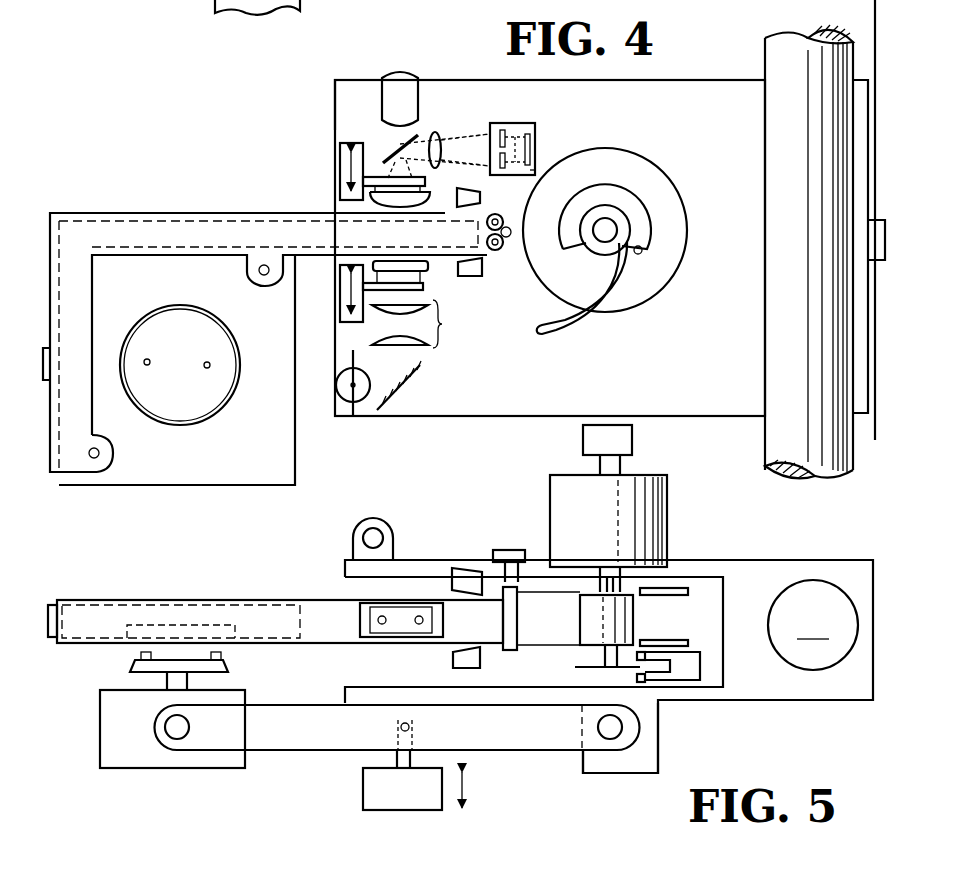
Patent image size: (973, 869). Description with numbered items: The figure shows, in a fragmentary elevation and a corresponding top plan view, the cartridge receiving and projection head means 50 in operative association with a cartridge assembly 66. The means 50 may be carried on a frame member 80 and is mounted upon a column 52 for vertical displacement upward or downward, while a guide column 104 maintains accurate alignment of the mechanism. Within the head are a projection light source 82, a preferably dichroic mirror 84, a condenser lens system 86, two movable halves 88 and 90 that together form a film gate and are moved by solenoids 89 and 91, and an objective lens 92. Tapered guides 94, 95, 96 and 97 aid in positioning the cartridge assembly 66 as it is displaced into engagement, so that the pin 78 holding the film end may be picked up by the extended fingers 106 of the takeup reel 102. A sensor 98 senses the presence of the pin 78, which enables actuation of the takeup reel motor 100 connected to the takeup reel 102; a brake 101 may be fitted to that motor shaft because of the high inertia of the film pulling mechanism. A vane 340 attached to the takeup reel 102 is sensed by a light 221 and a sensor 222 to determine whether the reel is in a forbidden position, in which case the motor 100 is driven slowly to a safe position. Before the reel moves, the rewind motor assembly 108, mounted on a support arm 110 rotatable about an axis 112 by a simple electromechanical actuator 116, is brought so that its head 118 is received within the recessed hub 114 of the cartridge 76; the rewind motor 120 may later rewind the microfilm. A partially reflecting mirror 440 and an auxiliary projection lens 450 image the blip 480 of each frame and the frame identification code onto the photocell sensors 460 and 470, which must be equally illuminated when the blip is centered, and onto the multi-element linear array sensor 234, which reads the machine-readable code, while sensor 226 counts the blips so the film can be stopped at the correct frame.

In FIG. 4, the cartridge receiving and projection head means 50 is at (300, 106).
In FIG. 4, the cartridge assembly 66 is at (142, 190).
In FIG. 4, the frame member 80 is at (357, 92).
In FIG. 4, the objective lens 92 is at (408, 76).
In FIG. 4, the solenoid 91 is at (353, 159).
In FIG. 4, the partially reflecting mirror 440 is at (413, 136).
In FIG. 4, the auxiliary projection lens 450 is at (438, 140).
In FIG. 4, the sensor 226 is at (553, 128).
In FIG. 4, the sensor (photocell) 460 is at (510, 135).
In FIG. 4, the blip 480 is at (531, 150).
In FIG. 4, the sensor (photocell) 470 is at (515, 176).
In FIG. 4, the sensor 234 is at (536, 158).
In FIG. 4, the film gate half 90 is at (426, 202).
In FIG. 4, the tapered guide 96 is at (481, 200).
In FIG. 4, the takeup reel 102 is at (666, 257).
In FIG. 5, the takeup reel 102 is at (648, 598).
In FIG. 4, the vane 340 is at (647, 221).
In FIG. 5, the vane 340 is at (682, 699).
In FIG. 4, the sensor 222 is at (641, 254).
In FIG. 5, the sensor 222 is at (698, 672).
In FIG. 4, the extended fingers 106 is at (563, 338).
In FIG. 4, the pin 78 is at (508, 246).
In FIG. 4, the tapered guide 94 is at (480, 271).
In FIG. 4, the film gate half 88 is at (430, 268).
In FIG. 4, the condenser lens system 86 is at (423, 324).
In FIG. 4, the solenoid 89 is at (350, 307).
In FIG. 4, the projection light source 82 is at (345, 402).
In FIG. 4, the mirror 84 is at (405, 396).
In FIG. 4, the column 52 is at (790, 63).
In FIG. 5, the column 52 is at (813, 625).
In FIG. 5, the takeup reel motor 100 is at (578, 490).
In FIG. 5, the brake 101 is at (632, 442).
In FIG. 5, the guide column 104 is at (369, 538).
In FIG. 5, the sensor 98 is at (513, 550).
In FIG. 5, the tapered guide 97 is at (463, 568).
In FIG. 5, the cartridge 76 is at (262, 618).
In FIG. 5, the recessed hub 114 is at (160, 630).
In FIG. 5, the tapered guide 95 is at (452, 658).
In FIG. 5, the light 221 is at (700, 655).
In FIG. 5, the rewind motor assembly 108 is at (169, 710).
In FIG. 5, the head 118 is at (222, 664).
In FIG. 5, the rewind motor 120 is at (115, 725).
In FIG. 5, the support arm 110 is at (270, 742).
In FIG. 5, the axis 112 is at (617, 736).
In FIG. 5, the electromechanical actuator 116 is at (386, 796).